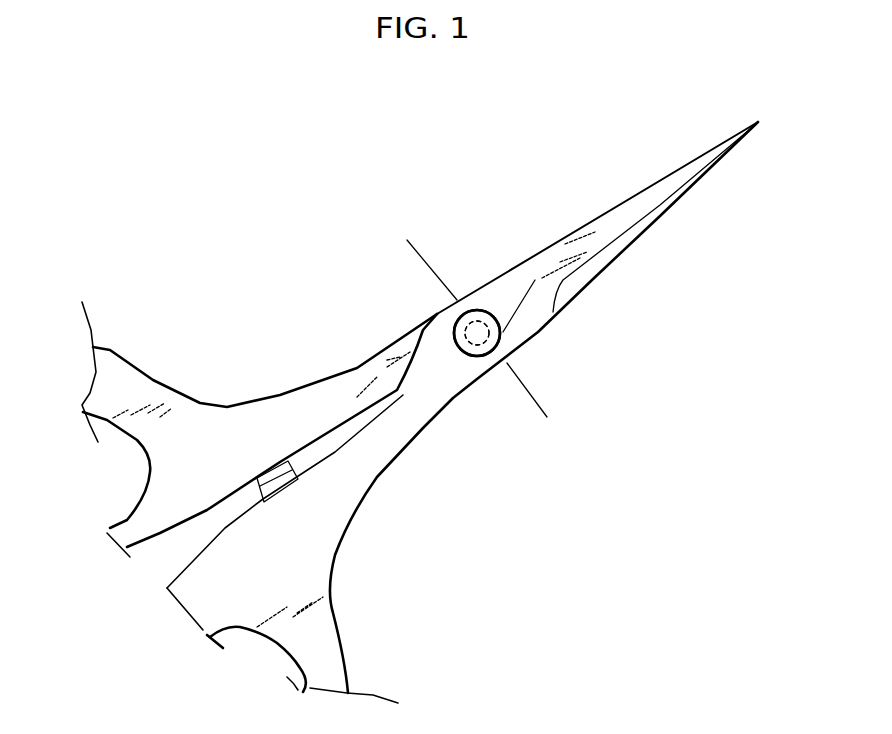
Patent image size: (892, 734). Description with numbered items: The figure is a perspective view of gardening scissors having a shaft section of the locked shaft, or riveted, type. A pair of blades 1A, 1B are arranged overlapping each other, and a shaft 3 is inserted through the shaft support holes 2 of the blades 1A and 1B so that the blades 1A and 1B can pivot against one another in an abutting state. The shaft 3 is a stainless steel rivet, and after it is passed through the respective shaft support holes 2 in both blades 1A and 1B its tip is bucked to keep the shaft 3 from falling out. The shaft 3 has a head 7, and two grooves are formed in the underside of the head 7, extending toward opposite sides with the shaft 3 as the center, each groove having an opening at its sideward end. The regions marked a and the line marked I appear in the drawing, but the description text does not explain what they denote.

The blade 1A is at (550, 236).
The blade 1B is at (348, 364).
The shaft support hole 2 is at (500, 316).
The head 7 is at (466, 354).
The shaft 3 is at (477, 333).
The divided regions a is at (480, 308).
The section line I is at (474, 329).